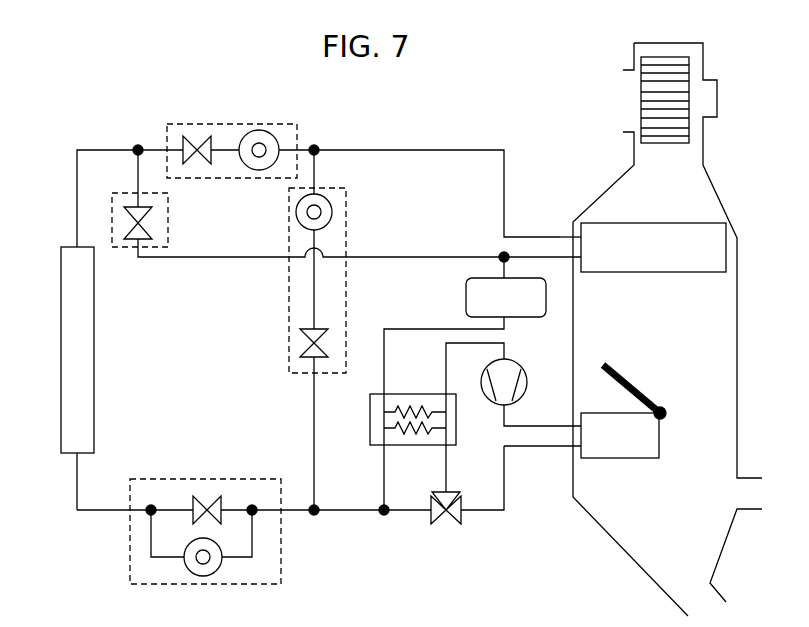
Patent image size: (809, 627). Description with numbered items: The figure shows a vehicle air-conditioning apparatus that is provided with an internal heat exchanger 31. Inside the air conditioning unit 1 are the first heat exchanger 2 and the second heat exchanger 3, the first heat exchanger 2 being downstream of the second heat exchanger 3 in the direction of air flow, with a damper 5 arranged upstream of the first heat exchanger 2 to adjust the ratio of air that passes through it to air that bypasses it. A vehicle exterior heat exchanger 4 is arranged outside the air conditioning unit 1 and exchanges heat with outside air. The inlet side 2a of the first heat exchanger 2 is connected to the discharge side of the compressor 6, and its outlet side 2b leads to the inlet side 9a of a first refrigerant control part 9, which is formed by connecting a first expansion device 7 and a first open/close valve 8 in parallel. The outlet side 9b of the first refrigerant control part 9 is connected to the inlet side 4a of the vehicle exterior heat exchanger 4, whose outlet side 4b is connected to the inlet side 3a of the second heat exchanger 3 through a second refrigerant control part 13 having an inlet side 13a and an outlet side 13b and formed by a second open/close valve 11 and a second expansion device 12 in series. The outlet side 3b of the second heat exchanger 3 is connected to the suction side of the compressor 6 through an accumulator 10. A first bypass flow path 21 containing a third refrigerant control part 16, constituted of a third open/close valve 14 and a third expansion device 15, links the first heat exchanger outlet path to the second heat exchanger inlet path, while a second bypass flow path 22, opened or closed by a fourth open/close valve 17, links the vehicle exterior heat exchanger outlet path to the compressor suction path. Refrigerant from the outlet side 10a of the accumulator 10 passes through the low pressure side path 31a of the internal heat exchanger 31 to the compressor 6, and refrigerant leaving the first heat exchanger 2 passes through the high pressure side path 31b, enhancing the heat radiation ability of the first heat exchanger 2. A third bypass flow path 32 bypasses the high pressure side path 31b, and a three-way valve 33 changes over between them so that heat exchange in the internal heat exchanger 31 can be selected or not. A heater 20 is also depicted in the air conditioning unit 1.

The air conditioning unit 1 is at (737, 330).
The first heat exchanger 2 is at (659, 440).
The inlet side of the first heat exchanger 2a is at (580, 426).
The outlet side of the first heat exchanger 2b is at (580, 447).
The second heat exchanger 3 is at (726, 250).
The inlet side of the second heat exchanger 3a is at (580, 237).
The outlet side of the second heat exchanger 3b is at (580, 258).
The vehicle exterior heat exchanger 4 is at (61, 430).
The inlet side of the vehicle exterior heat exchanger 4a is at (77, 480).
The outlet side of the vehicle exterior heat exchanger 4b is at (76, 240).
The damper 5 is at (608, 366).
The compressor 6 is at (527, 377).
The first expansion device 7 is at (221, 568).
The first open/close valve 8 is at (221, 503).
The first refrigerant control part 9 is at (281, 549).
The inlet side of the first refrigerant control part 9a is at (297, 508).
The outlet side of the first refrigerant control part 9b is at (108, 510).
The accumulator 10 is at (466, 298).
The outlet side of the accumulator 10a is at (415, 329).
The second open/close valve 11 is at (202, 158).
The second expansion device 12 is at (265, 163).
The second refrigerant control part 13 is at (297, 132).
The inlet side of the second refrigerant control part 13a is at (153, 150).
The outlet side of the second refrigerant control part 13b is at (318, 150).
The third open/close valve 14 is at (315, 330).
The third expansion device 15 is at (297, 223).
The third refrigerant control part 16 is at (289, 342).
The fourth open/close valve 17 is at (135, 238).
The heater 20 is at (665, 57).
The first bypass flow path 21 is at (316, 483).
The second bypass flow path 22 is at (200, 259).
The internal heat exchanger 31 is at (398, 394).
The low pressure side path 31a is at (392, 413).
The high pressure side path 31b is at (392, 428).
The third bypass flow path 32 is at (403, 513).
The three-way valve 33 is at (446, 527).